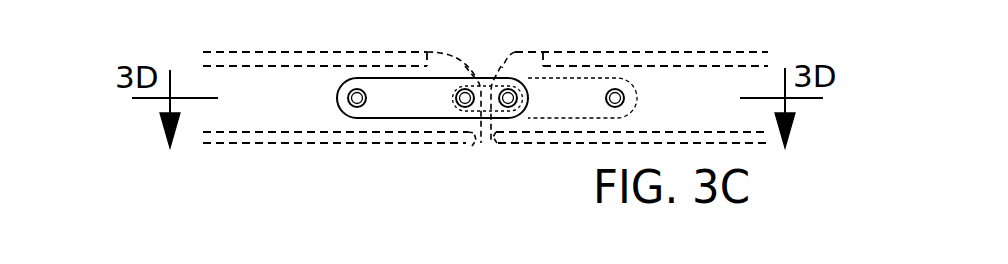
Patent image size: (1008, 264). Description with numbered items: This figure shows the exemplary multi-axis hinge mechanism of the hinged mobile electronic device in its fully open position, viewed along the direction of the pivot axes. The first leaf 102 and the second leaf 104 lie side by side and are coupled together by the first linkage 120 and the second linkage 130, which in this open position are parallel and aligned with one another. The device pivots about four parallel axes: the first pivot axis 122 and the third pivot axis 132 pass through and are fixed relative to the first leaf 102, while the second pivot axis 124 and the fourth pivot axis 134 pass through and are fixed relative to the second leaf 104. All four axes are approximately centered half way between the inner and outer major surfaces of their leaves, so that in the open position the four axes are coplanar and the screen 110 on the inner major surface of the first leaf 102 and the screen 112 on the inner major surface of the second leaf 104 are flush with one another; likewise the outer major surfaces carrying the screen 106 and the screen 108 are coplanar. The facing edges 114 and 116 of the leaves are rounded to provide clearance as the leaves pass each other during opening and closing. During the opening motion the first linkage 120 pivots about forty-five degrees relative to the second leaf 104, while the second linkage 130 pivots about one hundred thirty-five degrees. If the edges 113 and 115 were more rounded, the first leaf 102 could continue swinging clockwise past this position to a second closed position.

The first leaf 102 is at (718, 80).
The second leaf 104 is at (227, 90).
The screen 106 is at (740, 140).
The screen 108 is at (243, 143).
The screen 110 is at (687, 52).
The screen 112 is at (240, 57).
The edge 113 is at (488, 133).
The facing edge 114 is at (504, 62).
The edge 115 is at (480, 135).
The facing edge 116 is at (462, 62).
The first linkage 120 is at (408, 95).
The first pivot axis 122 is at (508, 98).
The second pivot axis 124 is at (356, 97).
The second linkage 130 is at (569, 94).
The third pivot axis 132 is at (618, 88).
The fourth pivot axis 134 is at (465, 98).